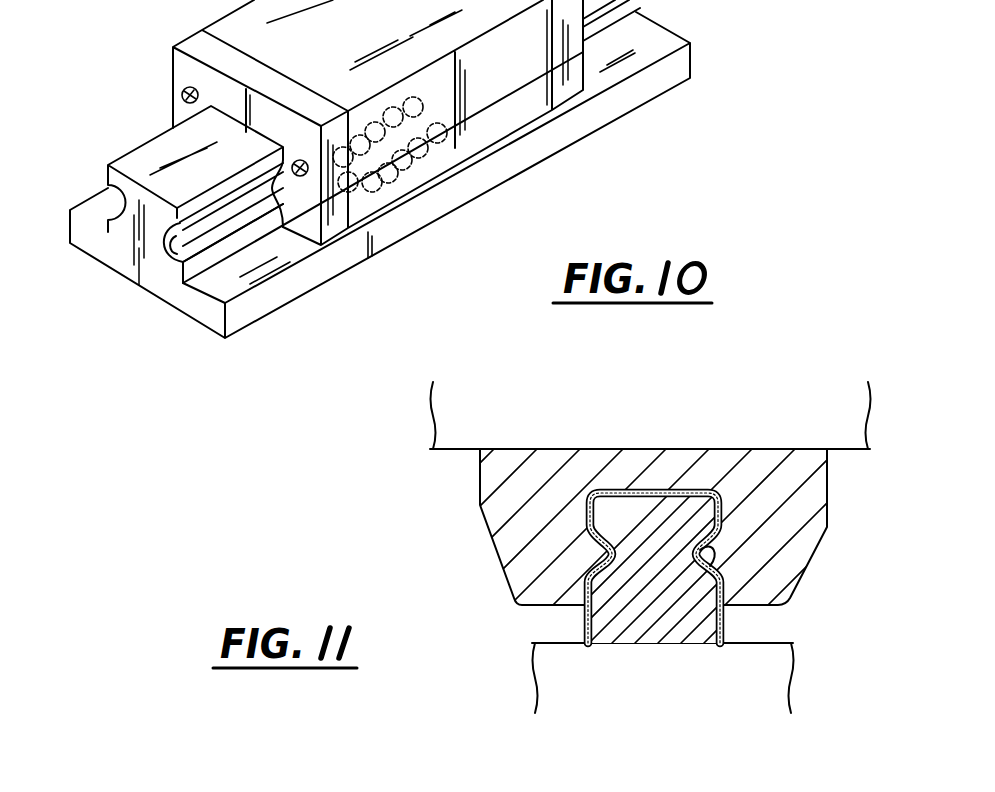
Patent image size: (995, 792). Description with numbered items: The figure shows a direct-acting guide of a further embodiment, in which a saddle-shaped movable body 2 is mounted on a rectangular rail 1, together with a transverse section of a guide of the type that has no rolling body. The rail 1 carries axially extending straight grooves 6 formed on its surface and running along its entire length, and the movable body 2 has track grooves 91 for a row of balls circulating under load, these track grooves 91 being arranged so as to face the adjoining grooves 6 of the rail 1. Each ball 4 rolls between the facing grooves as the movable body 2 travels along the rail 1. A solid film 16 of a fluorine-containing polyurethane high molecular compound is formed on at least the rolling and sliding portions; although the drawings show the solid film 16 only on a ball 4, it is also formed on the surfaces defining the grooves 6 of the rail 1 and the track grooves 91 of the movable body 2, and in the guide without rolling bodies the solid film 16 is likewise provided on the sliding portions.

In FIG. 10, the rail 1 is at (160, 150).
In FIG. 11, the rail 1 is at (600, 625).
In FIG. 11, the movable body 2 is at (494, 522).
In FIG. 10, the ball 4 is at (413, 168).
In FIG. 10, the groove 6 is at (173, 254).
In FIG. 11, the groove 6 is at (702, 552).
In FIG. 10, the solid film 16 is at (231, 236).
In FIG. 11, the track groove 91 is at (635, 545).